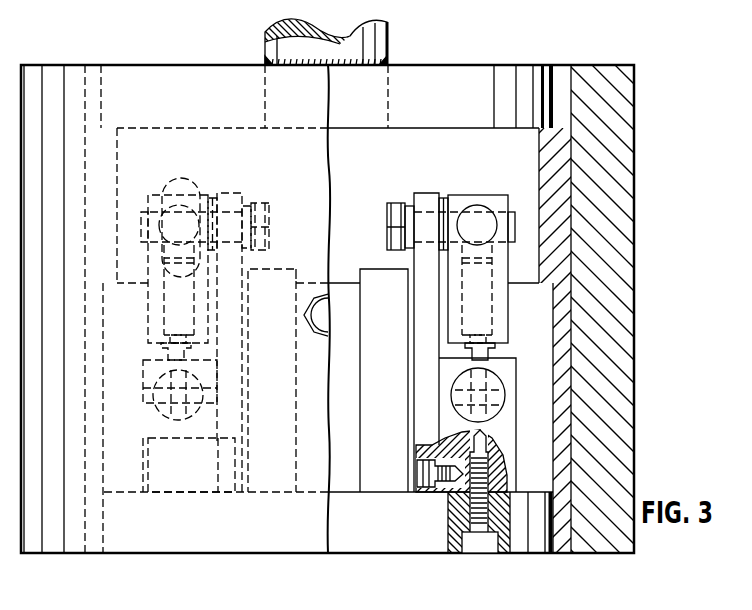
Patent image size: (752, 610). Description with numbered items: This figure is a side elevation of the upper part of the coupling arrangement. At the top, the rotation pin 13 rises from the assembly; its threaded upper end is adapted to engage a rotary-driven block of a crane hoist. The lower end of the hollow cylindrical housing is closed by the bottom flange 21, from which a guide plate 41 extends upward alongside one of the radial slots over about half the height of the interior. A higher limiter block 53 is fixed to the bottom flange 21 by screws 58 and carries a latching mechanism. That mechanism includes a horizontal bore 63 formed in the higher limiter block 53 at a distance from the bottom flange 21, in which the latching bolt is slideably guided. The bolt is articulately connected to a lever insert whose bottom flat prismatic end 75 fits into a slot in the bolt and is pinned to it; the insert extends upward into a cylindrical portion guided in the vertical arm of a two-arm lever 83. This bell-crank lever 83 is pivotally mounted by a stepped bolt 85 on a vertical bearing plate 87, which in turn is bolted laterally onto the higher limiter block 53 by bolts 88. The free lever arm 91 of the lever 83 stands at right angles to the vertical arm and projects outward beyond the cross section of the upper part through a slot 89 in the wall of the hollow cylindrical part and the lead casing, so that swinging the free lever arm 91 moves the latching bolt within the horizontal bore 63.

The rotation pin 13 is at (389, 42).
The bottom flange 21 is at (532, 540).
The guide plate 41 is at (375, 495).
The higher limiter block 53 is at (505, 445).
The screw 58 is at (480, 545).
The horizontal bore 63 is at (494, 412).
The bottom flat prismatic end 75 is at (488, 355).
The two-arm lever 83 is at (520, 257).
The stepped bolt 85 is at (516, 228).
The vertical bearing plate 87 is at (428, 412).
The bolt 88 is at (423, 494).
The slot 89 is at (178, 178).
The free lever arm 91 is at (486, 222).